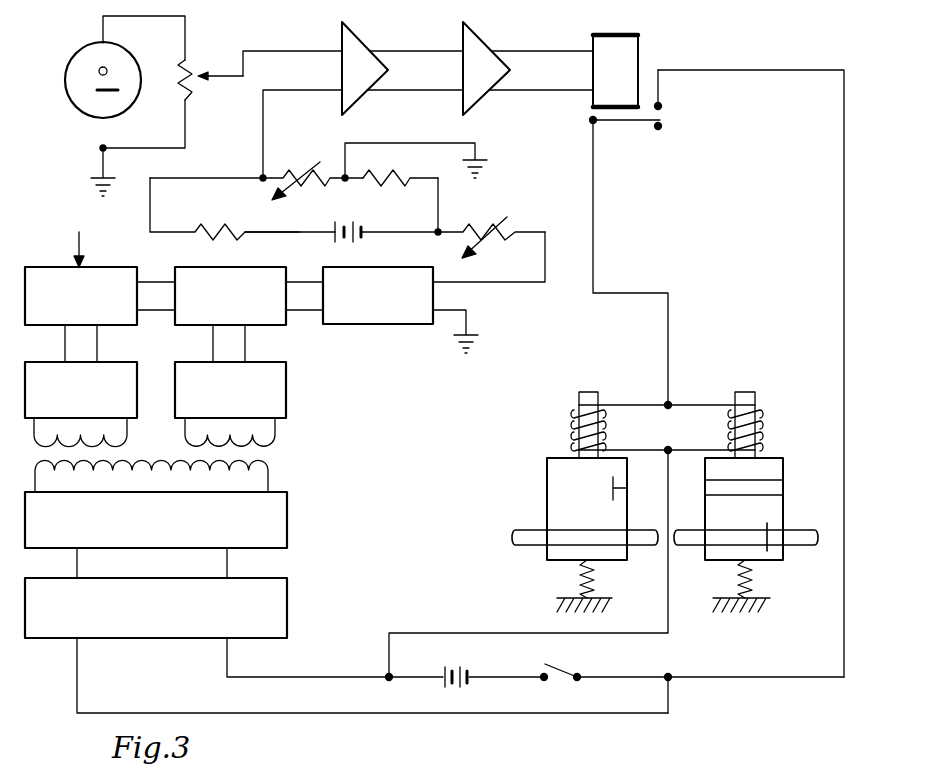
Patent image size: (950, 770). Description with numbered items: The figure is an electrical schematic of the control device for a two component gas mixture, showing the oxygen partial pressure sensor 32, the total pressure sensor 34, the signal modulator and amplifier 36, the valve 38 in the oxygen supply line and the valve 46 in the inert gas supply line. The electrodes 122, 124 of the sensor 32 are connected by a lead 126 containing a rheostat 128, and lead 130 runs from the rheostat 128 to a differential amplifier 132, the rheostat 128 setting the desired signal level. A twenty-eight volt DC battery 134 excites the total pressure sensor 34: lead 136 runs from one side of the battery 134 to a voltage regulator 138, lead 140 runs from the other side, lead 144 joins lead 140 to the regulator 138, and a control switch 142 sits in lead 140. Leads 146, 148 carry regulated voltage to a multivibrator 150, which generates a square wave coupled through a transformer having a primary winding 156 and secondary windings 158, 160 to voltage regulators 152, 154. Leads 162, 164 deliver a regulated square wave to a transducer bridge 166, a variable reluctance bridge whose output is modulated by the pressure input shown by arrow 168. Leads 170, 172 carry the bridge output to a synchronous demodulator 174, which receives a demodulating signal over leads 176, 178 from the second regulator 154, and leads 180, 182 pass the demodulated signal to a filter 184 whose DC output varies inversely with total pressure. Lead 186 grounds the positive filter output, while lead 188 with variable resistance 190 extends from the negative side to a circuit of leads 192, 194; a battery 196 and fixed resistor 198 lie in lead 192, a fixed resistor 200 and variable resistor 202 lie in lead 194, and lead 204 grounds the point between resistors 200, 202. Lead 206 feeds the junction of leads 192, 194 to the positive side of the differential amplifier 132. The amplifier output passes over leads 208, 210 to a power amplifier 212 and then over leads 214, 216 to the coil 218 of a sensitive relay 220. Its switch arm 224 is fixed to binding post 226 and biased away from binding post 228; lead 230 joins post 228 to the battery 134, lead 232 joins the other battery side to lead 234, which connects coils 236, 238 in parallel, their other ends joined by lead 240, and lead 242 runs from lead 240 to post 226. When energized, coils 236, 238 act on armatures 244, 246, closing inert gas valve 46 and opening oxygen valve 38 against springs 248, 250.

The oxygen partial pressure sensor 32 is at (72, 92).
The total pressure sensor 34 is at (308, 403).
The signal modulator and amplifier 36 is at (480, 122).
The valve 38 is at (783, 505).
The valve 46 is at (546, 500).
The electrode 122 is at (93, 93).
The electrode 124 is at (96, 69).
The lead 126 is at (128, 148).
The rheostat 128 is at (194, 100).
The lead 130 is at (268, 52).
The differential amplifier 132 is at (341, 77).
The battery 134 is at (443, 664).
The lead 136 is at (283, 677).
The voltage regulator 138 is at (288, 608).
The lead 140 is at (526, 672).
The control switch 142 is at (560, 665).
The lead 144 is at (568, 713).
The lead 146 is at (78, 563).
The lead 148 is at (228, 563).
The multivibrator 150 is at (287, 505).
The voltage regulator 152 is at (137, 372).
The voltage regulator 154 is at (282, 370).
The primary winding 156 is at (270, 470).
The secondary winding 158 is at (127, 431).
The secondary winding 160 is at (275, 431).
The lead 162 is at (63, 343).
The lead 164 is at (97, 343).
The transducer bridge 166 is at (112, 267).
The arrow 168 is at (77, 240).
The lead 170 is at (153, 278).
The lead 172 is at (147, 308).
The synchronous demodulator 174 is at (247, 267).
The lead 176 is at (211, 343).
The lead 178 is at (247, 343).
The lead 180 is at (301, 278).
The lead 182 is at (300, 307).
The filter 184 is at (367, 325).
The lead 186 is at (468, 325).
The lead 188 is at (546, 270).
The variable resistance 190 is at (487, 214).
The lead 192 is at (312, 226).
The lead 194 is at (440, 200).
The battery 196 is at (335, 222).
The fixed resistor 198 is at (224, 220).
The fixed resistor 200 is at (393, 176).
The variable resistor 202 is at (280, 166).
The lead 204 is at (379, 143).
The lead 206 is at (266, 108).
The lead 208 is at (426, 45).
The lead 210 is at (444, 82).
The power amplifier 212 is at (482, 41).
The lead 214 is at (540, 50).
The lead 216 is at (522, 90).
The coil 218 is at (632, 35).
The relay 220 is at (655, 60).
The switch arm 224 is at (622, 126).
The binding post 226 is at (593, 120).
The binding post 228 is at (661, 104).
The lead 230 is at (790, 70).
The lead 232 is at (666, 583).
The lead 234 is at (710, 438).
The coil 236 is at (576, 428).
The coil 238 is at (759, 428).
The lead 240 is at (715, 391).
The lead 242 is at (596, 225).
The armature 244 is at (590, 392).
The armature 246 is at (757, 392).
The spring 248 is at (577, 583).
The spring 250 is at (758, 583).